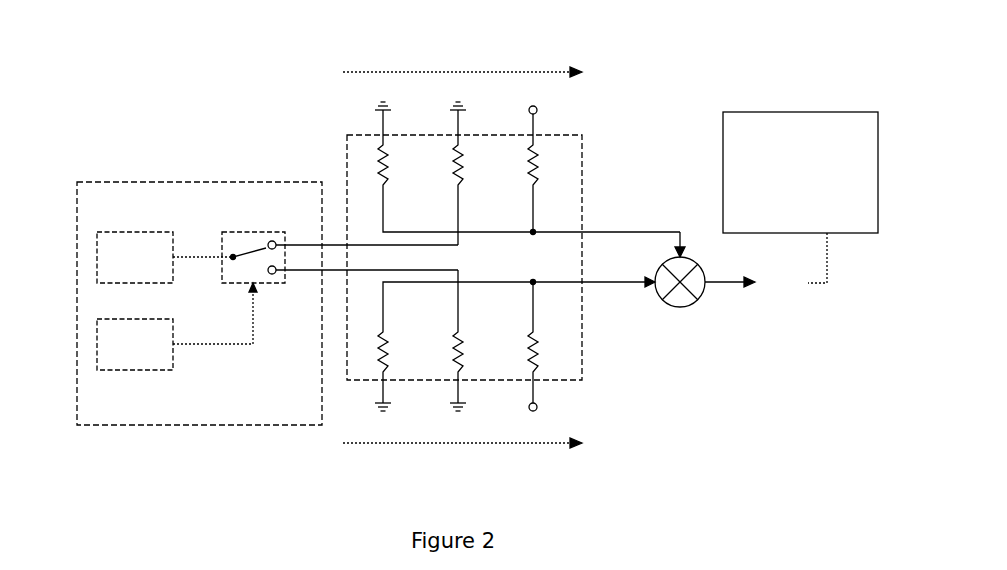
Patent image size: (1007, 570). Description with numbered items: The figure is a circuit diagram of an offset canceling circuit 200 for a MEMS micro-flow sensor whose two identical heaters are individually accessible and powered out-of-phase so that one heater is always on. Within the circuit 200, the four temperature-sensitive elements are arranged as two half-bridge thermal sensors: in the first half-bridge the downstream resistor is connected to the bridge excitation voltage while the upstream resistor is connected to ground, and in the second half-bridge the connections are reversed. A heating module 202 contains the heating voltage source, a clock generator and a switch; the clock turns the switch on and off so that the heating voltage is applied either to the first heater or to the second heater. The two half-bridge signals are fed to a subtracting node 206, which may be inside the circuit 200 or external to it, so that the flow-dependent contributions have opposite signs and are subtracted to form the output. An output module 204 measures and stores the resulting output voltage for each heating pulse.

The circuit 200 is at (582, 163).
The heating module 202 is at (182, 182).
The output module 204 is at (722, 162).
The subtracting node 206 is at (670, 302).